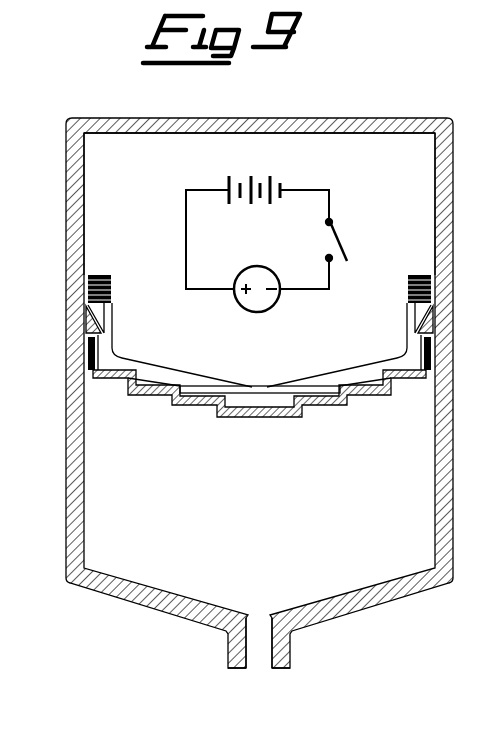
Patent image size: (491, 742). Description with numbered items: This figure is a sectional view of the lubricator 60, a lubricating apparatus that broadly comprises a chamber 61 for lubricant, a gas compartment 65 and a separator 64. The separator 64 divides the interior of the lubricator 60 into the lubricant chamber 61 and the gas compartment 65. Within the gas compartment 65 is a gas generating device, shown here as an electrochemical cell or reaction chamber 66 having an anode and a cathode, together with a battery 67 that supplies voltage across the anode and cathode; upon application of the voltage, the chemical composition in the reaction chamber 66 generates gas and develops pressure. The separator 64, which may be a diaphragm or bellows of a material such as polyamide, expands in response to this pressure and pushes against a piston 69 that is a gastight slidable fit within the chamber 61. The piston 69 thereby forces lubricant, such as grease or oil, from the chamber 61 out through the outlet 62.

The lubricator 60 is at (113, 114).
The lubricant chamber 61 is at (125, 480).
The outlet 62 is at (263, 652).
The separator 64 is at (250, 386).
The gas compartment 65 is at (366, 158).
The electrochemical cell or reaction chamber 66 is at (274, 298).
The battery 67 is at (283, 190).
The piston 69 is at (283, 418).